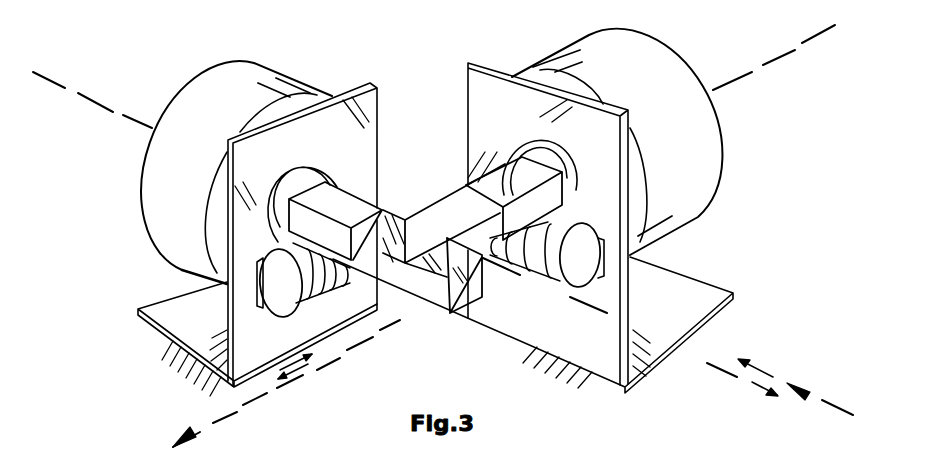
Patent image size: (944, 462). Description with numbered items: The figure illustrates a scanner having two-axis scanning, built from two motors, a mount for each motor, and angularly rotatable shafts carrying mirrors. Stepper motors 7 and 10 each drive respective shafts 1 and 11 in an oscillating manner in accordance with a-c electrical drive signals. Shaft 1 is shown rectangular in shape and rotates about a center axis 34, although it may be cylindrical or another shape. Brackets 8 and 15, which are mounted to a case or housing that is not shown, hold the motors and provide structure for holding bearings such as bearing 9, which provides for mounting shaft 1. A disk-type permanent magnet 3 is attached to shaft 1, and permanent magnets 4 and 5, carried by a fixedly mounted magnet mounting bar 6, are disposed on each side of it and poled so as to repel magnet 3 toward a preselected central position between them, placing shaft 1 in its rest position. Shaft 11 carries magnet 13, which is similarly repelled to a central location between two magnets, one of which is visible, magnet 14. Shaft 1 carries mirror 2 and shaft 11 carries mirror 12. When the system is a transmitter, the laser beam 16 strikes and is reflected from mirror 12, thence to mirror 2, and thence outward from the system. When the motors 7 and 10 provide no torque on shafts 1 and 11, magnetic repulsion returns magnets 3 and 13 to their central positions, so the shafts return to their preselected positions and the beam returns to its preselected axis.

The angularly rotatable shaft 1 is at (328, 200).
The mirror 2 is at (459, 275).
The disk-type permanent magnet 3 is at (321, 273).
The permanent magnet 4 is at (281, 282).
The permanent magnet 5 is at (347, 275).
The magnet mounting bar 6 is at (257, 284).
The stepper motor 7 is at (222, 92).
The bracket 8 is at (268, 174).
The bearing 9 is at (298, 182).
The stepper motor 10 is at (602, 62).
The shaft 11 is at (465, 197).
The mirror 12 is at (482, 216).
The magnet 13 is at (535, 262).
The magnet 14 is at (567, 284).
The bracket 15 is at (507, 125).
The beam 16 is at (227, 413).
The center axis 34 is at (103, 110).